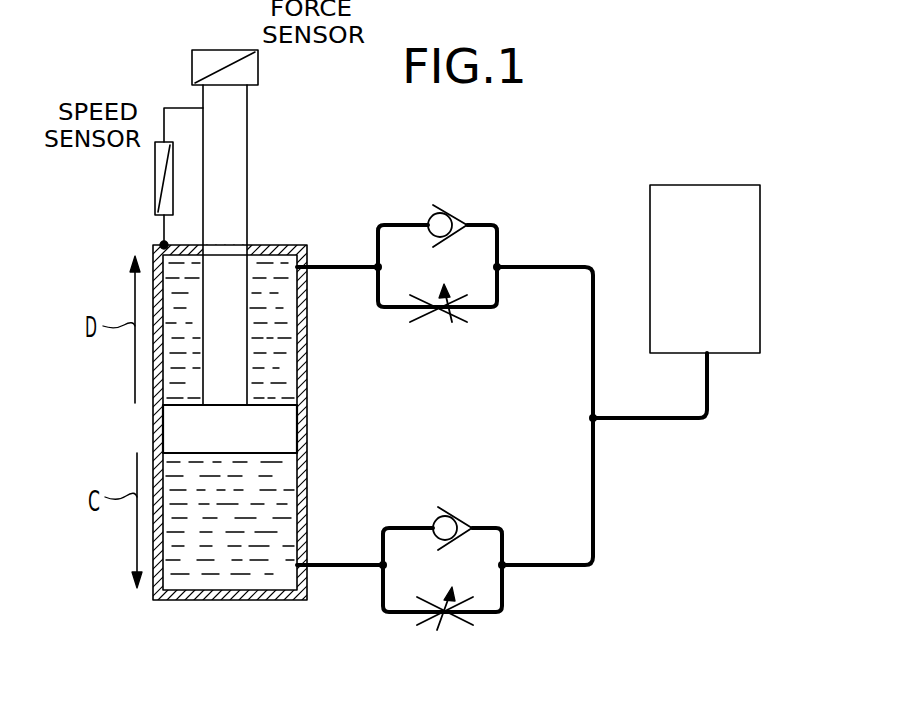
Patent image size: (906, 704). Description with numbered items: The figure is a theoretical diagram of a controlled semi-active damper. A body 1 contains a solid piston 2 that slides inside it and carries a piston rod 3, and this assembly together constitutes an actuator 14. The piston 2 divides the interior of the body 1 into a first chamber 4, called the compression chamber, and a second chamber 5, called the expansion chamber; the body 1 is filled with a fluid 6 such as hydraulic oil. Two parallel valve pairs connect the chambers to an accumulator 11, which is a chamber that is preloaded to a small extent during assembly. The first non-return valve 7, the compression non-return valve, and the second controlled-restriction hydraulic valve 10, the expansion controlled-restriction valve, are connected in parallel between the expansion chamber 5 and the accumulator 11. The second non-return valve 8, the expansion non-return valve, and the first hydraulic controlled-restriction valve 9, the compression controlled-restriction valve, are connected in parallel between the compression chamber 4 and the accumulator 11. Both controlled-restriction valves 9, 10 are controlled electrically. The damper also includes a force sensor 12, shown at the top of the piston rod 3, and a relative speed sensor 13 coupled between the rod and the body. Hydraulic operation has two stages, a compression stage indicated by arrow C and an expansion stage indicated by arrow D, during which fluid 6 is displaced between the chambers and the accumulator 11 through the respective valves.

The body 1 is at (302, 482).
The piston 2 is at (283, 432).
The piston rod 3 is at (236, 150).
The first chamber 4 is at (222, 578).
The second chamber 5 is at (157, 262).
The fluid 6 is at (250, 498).
The first non-return valve 7 is at (447, 212).
The second non-return valve 8 is at (456, 515).
The first hydraulic controlled-restriction valve 9 is at (447, 625).
The second controlled-restriction hydraulic valve 10 is at (447, 322).
The accumulator 11 is at (742, 218).
The force sensor 12 is at (262, 70).
The relative speed sensor 13 is at (155, 163).
The actuator 14 is at (312, 378).